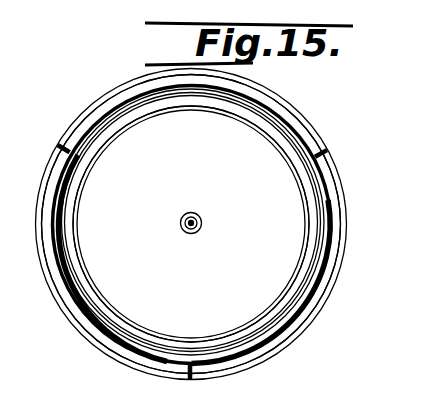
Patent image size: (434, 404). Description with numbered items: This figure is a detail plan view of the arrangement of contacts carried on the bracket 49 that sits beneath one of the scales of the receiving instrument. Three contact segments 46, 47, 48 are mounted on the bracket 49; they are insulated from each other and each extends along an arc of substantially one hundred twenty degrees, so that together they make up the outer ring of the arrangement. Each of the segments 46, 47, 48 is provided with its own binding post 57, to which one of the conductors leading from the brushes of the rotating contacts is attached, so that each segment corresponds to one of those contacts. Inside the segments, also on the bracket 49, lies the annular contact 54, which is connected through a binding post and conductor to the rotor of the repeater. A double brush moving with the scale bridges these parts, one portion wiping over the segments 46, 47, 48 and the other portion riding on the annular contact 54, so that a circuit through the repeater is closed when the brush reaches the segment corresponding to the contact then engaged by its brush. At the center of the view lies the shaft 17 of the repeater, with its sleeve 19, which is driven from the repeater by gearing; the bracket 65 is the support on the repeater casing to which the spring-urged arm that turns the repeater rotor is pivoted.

The repeater shaft 17 is at (200, 216).
The sleeve 19 is at (194, 233).
The contact segment 46 is at (112, 93).
The contact segment 47 is at (67, 302).
The contact segment 48 is at (307, 318).
The bracket 49 is at (191, 224).
The annular contact 54 is at (113, 322).
The binding post 57 is at (64, 131).
The bracket 65 is at (67, 213).